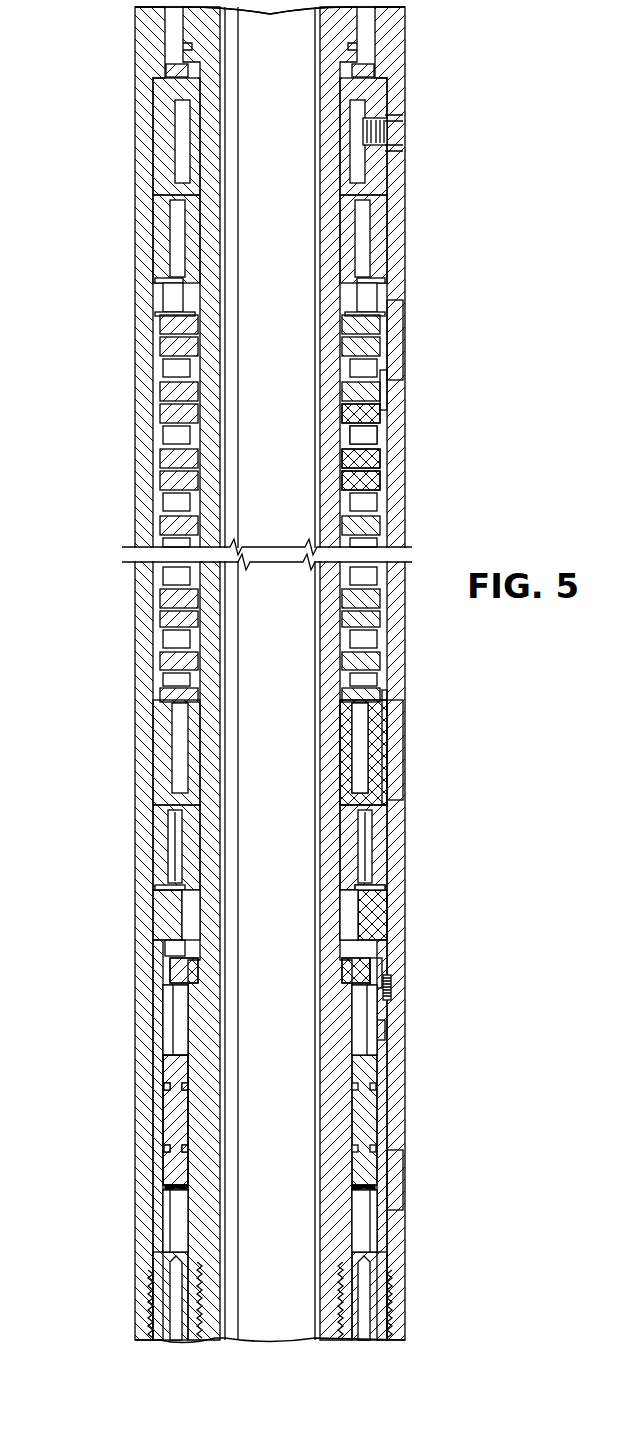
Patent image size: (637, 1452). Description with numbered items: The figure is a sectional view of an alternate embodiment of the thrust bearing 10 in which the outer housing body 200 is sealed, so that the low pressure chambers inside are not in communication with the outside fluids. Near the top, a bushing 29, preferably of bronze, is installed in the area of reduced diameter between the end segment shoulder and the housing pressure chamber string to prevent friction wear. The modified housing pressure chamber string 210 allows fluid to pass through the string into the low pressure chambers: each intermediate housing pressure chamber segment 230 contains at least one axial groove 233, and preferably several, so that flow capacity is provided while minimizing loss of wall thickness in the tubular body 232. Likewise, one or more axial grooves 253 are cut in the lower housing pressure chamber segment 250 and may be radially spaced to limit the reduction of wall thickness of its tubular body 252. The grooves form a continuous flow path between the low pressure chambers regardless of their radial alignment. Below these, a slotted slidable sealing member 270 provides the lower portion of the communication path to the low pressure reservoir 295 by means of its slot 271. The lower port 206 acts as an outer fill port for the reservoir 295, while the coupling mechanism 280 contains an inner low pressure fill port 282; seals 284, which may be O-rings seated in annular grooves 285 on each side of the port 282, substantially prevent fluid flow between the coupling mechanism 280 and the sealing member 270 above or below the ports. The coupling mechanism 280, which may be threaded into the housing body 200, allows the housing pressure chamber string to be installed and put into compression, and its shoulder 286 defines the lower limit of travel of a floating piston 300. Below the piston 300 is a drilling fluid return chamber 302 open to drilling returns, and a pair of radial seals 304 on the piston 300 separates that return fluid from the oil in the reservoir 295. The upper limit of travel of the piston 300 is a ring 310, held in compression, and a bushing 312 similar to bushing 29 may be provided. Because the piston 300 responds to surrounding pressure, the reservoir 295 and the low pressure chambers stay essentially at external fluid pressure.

The thrust bearing 10 is at (433, 70).
The bushing 29 is at (172, 74).
The housing body 200 is at (398, 343).
The housing pressure chamber string 210 is at (392, 392).
The intermediate housing pressure chamber segment 230 is at (382, 420).
The tubular body 232 is at (378, 452).
The axial groove 233 is at (380, 466).
The lower housing pressure chamber segment 250 is at (378, 720).
The tubular body 252 is at (393, 757).
The axial groove 253 is at (383, 770).
The slotted slidable sealing member 270 is at (375, 915).
The slot 271 is at (385, 932).
The inner low pressure fill port 282 is at (378, 980).
The lower port 206 is at (395, 993).
The annular groove 285 is at (385, 1028).
The seal 284 is at (387, 1033).
The coupling mechanism 280 is at (385, 1185).
The shoulder 286 is at (378, 1245).
The bushing 312 is at (180, 948).
The ring 310 is at (170, 982).
The low pressure reservoir 295 is at (170, 1022).
The radial seal 304 is at (165, 1087).
The floating piston 300 is at (168, 1118).
The drilling fluid return chamber 302 is at (170, 1212).